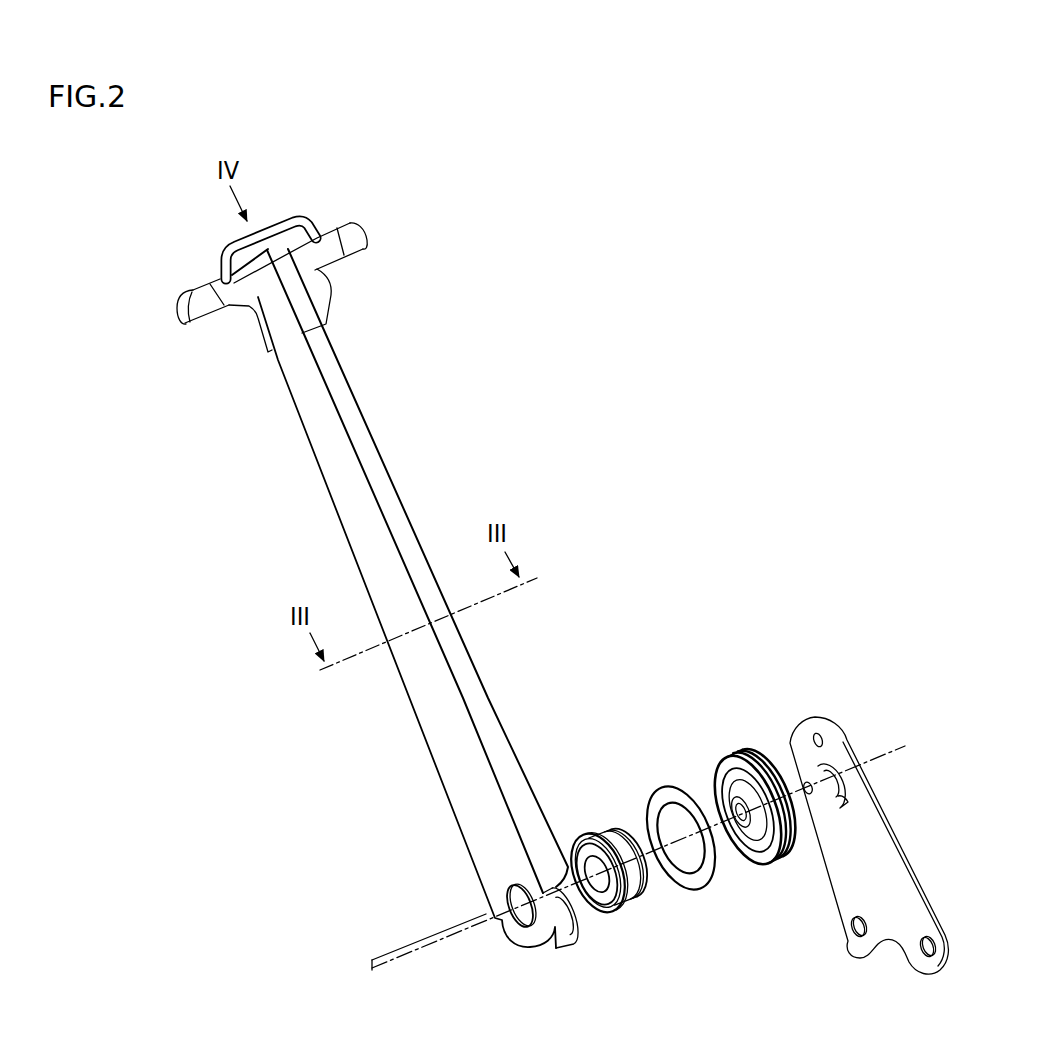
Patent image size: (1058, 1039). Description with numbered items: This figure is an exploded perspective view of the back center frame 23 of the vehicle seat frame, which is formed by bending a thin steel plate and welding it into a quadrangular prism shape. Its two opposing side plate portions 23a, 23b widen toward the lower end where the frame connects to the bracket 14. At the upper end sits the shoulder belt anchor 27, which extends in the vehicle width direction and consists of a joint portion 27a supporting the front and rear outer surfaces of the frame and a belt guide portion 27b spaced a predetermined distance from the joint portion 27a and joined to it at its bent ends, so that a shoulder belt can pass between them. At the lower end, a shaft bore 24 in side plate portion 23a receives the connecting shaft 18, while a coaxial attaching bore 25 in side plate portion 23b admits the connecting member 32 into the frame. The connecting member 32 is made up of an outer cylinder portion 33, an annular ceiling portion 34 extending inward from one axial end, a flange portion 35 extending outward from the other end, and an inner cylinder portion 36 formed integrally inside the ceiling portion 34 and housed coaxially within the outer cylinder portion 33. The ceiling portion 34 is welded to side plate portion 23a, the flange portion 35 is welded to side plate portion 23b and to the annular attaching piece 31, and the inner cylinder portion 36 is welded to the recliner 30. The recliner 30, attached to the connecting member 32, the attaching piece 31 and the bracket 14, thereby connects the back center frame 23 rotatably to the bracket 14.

The bracket 14 is at (888, 847).
The connecting shaft 18 is at (398, 947).
The back center frame 23 is at (312, 523).
The side plate portion 23a is at (458, 770).
The side plate portion 23b is at (503, 755).
The shaft bore 24 is at (508, 925).
The attaching bore 25 is at (557, 943).
The shoulder belt anchor 27 is at (112, 244).
The joint portion 27a is at (198, 290).
The belt guide portion 27b is at (220, 241).
The recliner 30 is at (745, 741).
The attaching piece 31 is at (670, 779).
The connecting member 32 is at (610, 801).
The outer cylinder portion 33 is at (630, 902).
The ceiling portion 34 is at (608, 905).
The flange portion 35 is at (647, 892).
The inner cylinder portion 36 is at (580, 850).